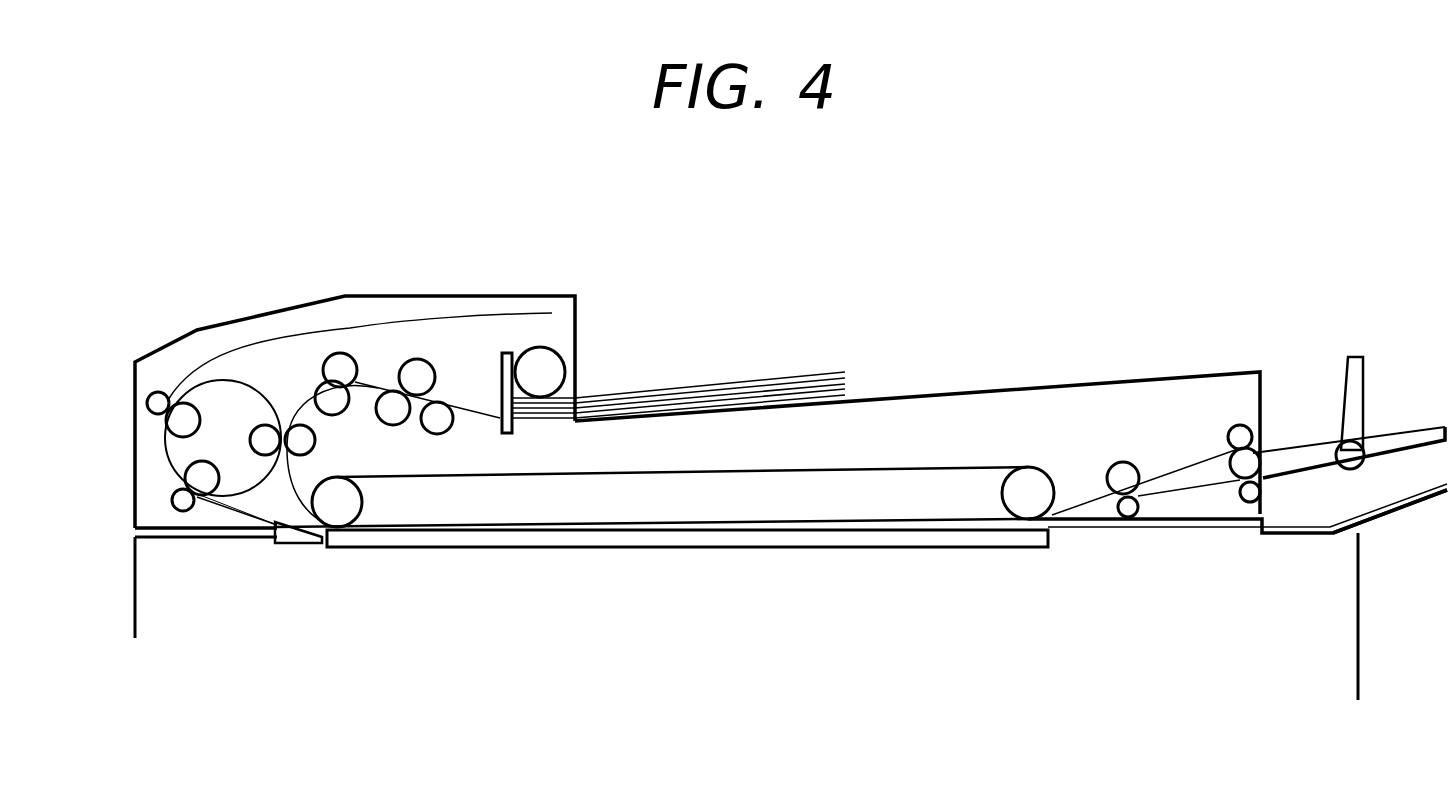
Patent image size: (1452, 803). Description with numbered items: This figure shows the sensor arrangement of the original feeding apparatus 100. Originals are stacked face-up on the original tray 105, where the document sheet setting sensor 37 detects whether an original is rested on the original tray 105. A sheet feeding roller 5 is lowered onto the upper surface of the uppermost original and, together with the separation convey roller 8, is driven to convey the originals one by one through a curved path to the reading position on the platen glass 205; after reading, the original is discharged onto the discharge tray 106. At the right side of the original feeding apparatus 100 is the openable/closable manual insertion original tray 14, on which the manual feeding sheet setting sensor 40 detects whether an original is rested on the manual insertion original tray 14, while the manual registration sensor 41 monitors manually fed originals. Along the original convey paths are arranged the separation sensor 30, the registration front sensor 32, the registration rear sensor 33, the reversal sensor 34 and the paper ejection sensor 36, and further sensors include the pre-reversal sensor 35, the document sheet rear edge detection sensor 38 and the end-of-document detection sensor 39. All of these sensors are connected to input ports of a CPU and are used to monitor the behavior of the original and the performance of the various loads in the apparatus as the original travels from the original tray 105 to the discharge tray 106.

The sheet feeding roller 5 is at (558, 350).
The separation convey roller 8 is at (440, 363).
The manual insertion original tray 14 is at (1279, 446).
The separation sensor 30 is at (362, 386).
The registration front sensor 32 is at (310, 410).
The registration rear sensor 33 is at (310, 468).
The reversal sensor 34 is at (235, 522).
The pre-reversal sensor 35 is at (268, 360).
The paper ejection sensor 36 is at (1228, 498).
The document sheet setting sensor 37 is at (530, 440).
The document sheet rear edge detection sensor 38 is at (878, 415).
The end-of-document detection sensor 39 is at (678, 432).
The manual feeding sheet setting sensor 40 is at (1210, 436).
The manual registration sensor 41 is at (1165, 505).
The original feeding apparatus 100 is at (405, 294).
The original tray 105 is at (1053, 380).
The discharge tray 106 is at (1392, 521).
The platen glass 205 is at (912, 542).